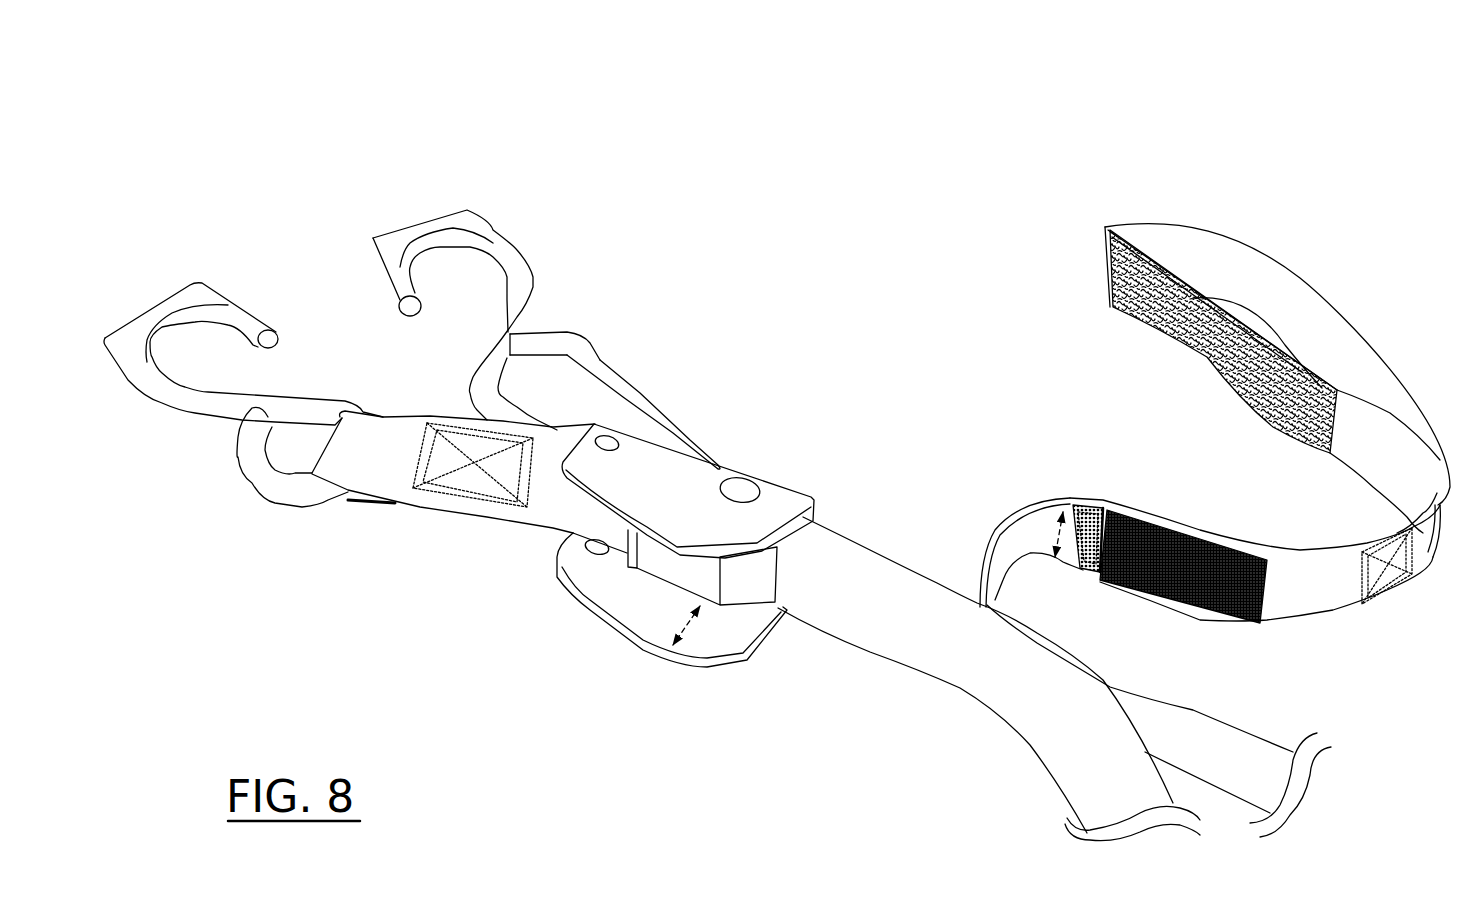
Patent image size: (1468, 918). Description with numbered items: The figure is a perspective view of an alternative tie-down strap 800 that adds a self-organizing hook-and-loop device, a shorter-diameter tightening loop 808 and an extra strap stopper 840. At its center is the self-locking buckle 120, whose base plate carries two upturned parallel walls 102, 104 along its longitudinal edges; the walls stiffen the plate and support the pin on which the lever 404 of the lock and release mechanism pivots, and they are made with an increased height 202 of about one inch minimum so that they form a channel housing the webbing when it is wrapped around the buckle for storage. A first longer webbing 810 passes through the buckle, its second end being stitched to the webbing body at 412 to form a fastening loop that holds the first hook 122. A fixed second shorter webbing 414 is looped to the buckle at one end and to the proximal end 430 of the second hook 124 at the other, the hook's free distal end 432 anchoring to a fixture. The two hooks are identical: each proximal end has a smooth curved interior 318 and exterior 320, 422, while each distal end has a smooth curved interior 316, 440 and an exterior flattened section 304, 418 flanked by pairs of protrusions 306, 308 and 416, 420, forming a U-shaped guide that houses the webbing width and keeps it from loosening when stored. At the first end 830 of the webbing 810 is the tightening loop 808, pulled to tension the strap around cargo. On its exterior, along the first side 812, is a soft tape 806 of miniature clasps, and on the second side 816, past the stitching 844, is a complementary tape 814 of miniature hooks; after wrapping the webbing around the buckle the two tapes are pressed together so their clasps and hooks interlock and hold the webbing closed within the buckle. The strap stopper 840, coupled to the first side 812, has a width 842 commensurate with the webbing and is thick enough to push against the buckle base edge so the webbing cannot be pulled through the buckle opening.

The tie-down strap 800 is at (777, 491).
The upturned parallel wall 102 is at (745, 646).
The upturned parallel wall 104 is at (729, 532).
The self-locking buckle 120 is at (685, 566).
The first hook 122 is at (249, 356).
The second hook 124 is at (530, 306).
The increased height 202 is at (683, 630).
The flattened section 304 is at (153, 310).
The protrusion 306 is at (243, 283).
The protrusion 308 is at (176, 270).
The interior of distal end 316 is at (180, 320).
The interior of proximal end 318 is at (280, 476).
The exterior of proximal end 320 is at (263, 503).
The lever 404 is at (715, 590).
The stitching 412 is at (487, 482).
The second shorter webbing 414 is at (668, 393).
The protrusion 416 is at (452, 198).
The flattened section 418 is at (421, 228).
The protrusion 420 is at (376, 214).
The exterior of proximal end 422 is at (577, 335).
The proximal end of second hook 430 is at (453, 380).
The distal end of second hook 432 is at (432, 281).
The interior of distal end 440 is at (435, 253).
The first strip or tape of soft fabric 806 is at (1209, 502).
The tightening loop 808 is at (1250, 322).
The first longer webbing 810 is at (945, 694).
The first side of first longer webbing 812 is at (1399, 454).
The second complementary strip or tape fabric 814 is at (1183, 612).
The second side of first longer webbing 816 is at (1337, 598).
The first end of first longer webbing 830 is at (1111, 216).
The strap stopper 840 is at (1083, 530).
The width of strap stopper 842 is at (1057, 533).
The stitching 844 is at (1383, 582).